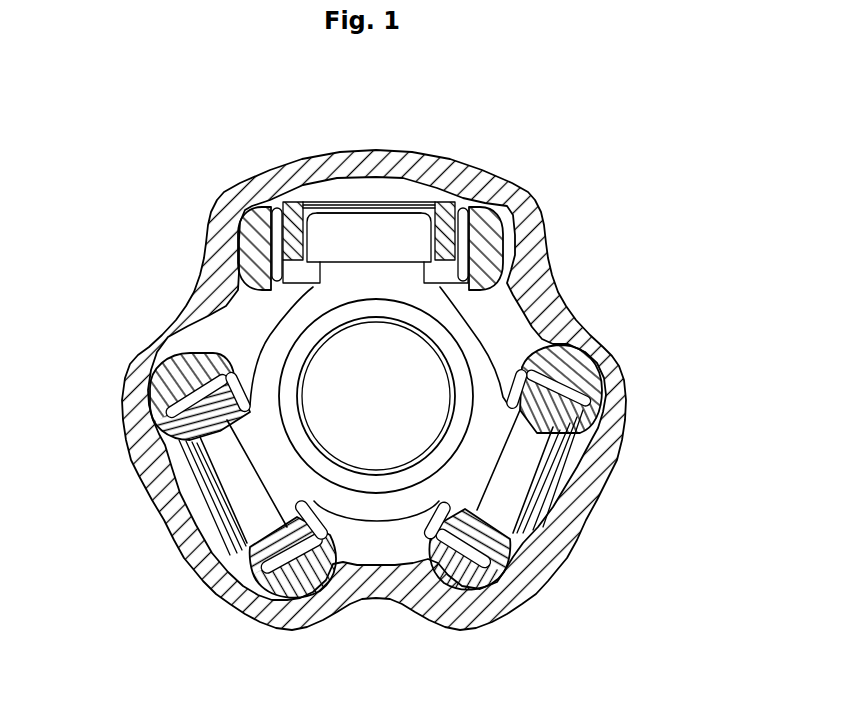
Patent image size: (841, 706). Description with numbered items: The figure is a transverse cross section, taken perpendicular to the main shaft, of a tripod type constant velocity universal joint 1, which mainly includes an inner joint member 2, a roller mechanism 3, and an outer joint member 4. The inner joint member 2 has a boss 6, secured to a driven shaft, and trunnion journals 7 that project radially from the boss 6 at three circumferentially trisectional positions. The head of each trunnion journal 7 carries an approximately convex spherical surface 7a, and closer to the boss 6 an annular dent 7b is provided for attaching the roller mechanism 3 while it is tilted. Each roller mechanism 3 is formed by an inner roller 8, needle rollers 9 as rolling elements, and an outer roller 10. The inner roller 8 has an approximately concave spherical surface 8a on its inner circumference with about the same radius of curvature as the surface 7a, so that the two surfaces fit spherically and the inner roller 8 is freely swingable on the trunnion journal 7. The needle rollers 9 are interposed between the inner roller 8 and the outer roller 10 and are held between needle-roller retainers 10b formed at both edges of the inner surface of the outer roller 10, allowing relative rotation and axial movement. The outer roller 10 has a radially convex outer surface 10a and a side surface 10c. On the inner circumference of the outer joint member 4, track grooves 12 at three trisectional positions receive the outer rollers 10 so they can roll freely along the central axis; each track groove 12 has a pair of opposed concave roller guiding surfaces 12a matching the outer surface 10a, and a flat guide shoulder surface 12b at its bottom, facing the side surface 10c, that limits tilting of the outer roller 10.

The tripod type constant velocity universal joint 1 is at (614, 152).
The inner joint member 2 is at (382, 534).
The roller mechanism 3 is at (485, 299).
The outer joint member 4 is at (441, 168).
The boss 6 is at (270, 345).
The trunnion journal 7 is at (352, 234).
The approximately convex spherical surface 7a is at (298, 216).
The annular dent 7b is at (470, 264).
The inner roller 8 is at (462, 220).
The approximately concave spherical surface 8a is at (416, 226).
The needle roller 9 is at (256, 206).
The outer roller 10 is at (252, 207).
The outer surface of the outer roller 10a is at (512, 214).
The needle-roller retainer 10b is at (243, 270).
The side surface of the outer roller 10c is at (592, 424).
The track groove 12 is at (383, 183).
The roller guiding surface 12a is at (238, 236).
The guide shoulder surface 12b is at (466, 208).